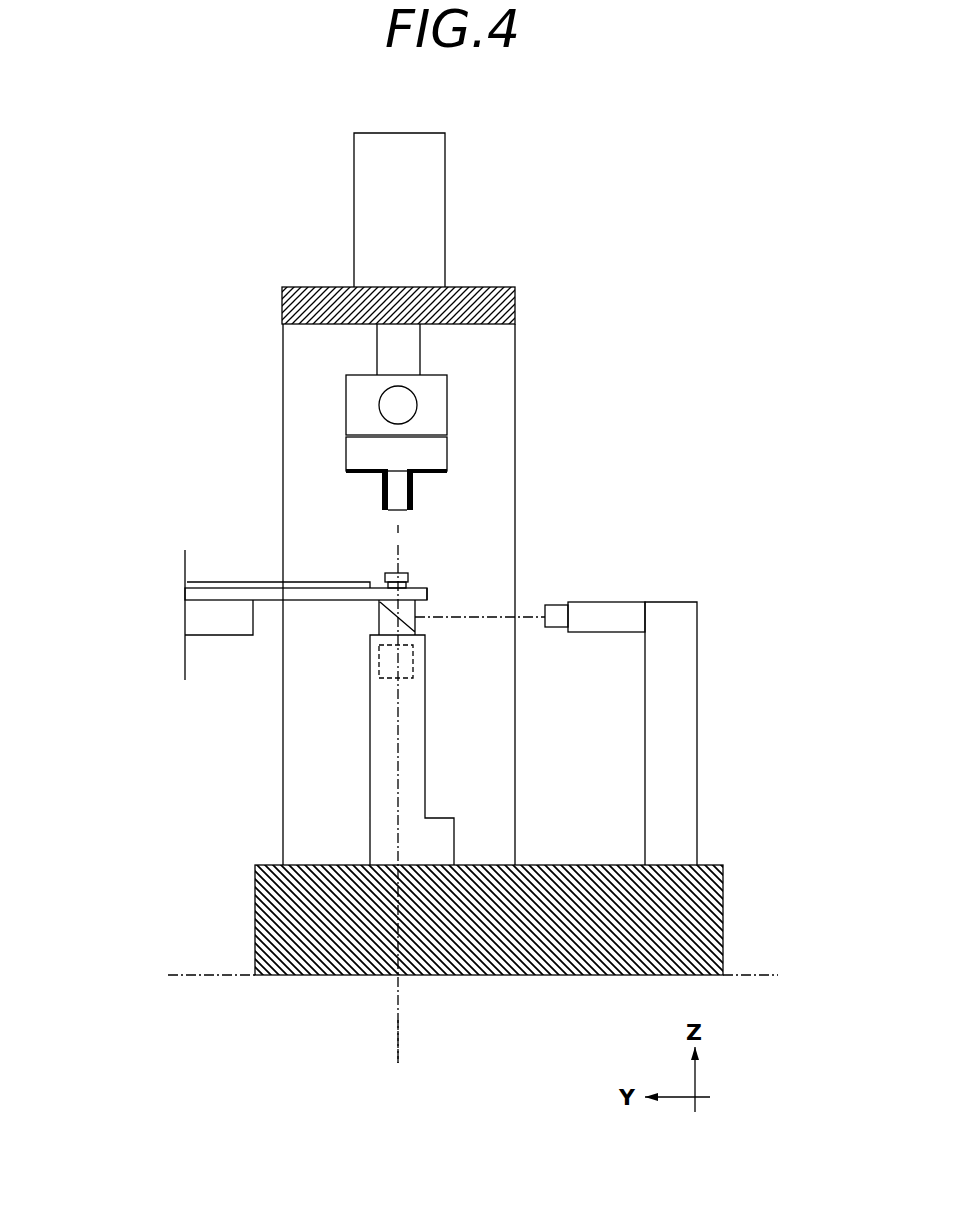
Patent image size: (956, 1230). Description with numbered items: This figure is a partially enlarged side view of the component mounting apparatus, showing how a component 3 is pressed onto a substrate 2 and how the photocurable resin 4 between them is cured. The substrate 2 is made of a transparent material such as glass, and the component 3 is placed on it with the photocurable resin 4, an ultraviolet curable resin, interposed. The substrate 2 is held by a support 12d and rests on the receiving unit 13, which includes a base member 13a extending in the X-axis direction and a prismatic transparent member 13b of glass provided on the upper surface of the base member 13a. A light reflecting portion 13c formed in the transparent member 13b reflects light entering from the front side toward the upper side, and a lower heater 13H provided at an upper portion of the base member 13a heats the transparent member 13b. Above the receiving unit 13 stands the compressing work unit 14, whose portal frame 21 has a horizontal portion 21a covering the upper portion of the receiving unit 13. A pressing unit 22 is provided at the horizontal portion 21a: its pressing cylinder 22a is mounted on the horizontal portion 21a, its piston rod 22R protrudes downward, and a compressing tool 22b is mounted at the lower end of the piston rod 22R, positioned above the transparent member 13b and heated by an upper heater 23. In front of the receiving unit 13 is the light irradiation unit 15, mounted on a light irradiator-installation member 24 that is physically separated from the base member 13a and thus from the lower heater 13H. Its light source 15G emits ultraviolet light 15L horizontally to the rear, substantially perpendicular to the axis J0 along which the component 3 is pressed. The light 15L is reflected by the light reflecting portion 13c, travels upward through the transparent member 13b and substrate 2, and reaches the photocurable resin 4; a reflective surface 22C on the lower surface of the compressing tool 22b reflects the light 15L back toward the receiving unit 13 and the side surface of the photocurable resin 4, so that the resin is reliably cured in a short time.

The compressing work unit 14 is at (533, 308).
The portal frame 21 is at (283, 445).
The horizontal portion 21a is at (287, 302).
The pressing unit 22 is at (342, 222).
The pressing cylinder 22a is at (433, 187).
The piston rod 22R is at (383, 347).
The compressing tool 22b is at (440, 455).
The reflective surface 22C is at (358, 473).
The upper heater 23 is at (408, 402).
The substrate 2 is at (258, 582).
The component 3 is at (403, 573).
The photocurable resin 4 is at (417, 585).
The support arm 12d is at (192, 617).
The receiving unit 13 is at (357, 738).
The base member 13a is at (425, 752).
The transparent member 13b is at (415, 625).
The light reflecting portion 13c is at (380, 602).
The lower heater 13H is at (370, 667).
The light irradiation unit 15 is at (614, 640).
The light source 15G is at (557, 620).
The light 15L is at (473, 617).
The light irradiator-installation member 24 is at (685, 752).
The axis J0 is at (398, 1032).